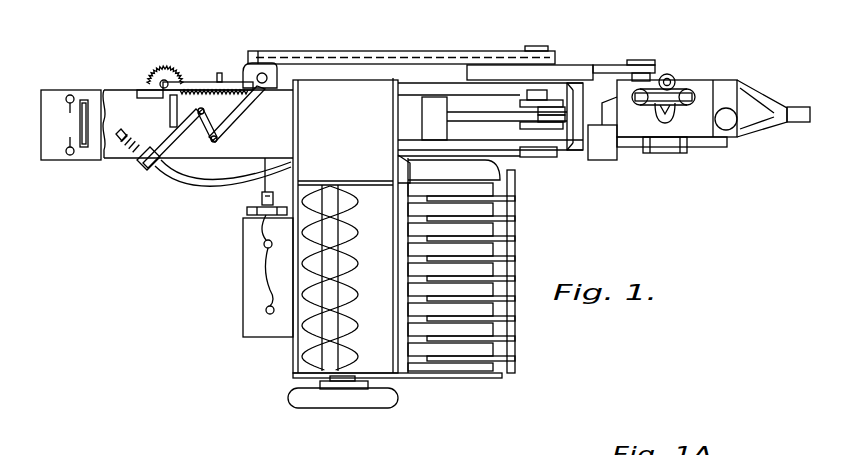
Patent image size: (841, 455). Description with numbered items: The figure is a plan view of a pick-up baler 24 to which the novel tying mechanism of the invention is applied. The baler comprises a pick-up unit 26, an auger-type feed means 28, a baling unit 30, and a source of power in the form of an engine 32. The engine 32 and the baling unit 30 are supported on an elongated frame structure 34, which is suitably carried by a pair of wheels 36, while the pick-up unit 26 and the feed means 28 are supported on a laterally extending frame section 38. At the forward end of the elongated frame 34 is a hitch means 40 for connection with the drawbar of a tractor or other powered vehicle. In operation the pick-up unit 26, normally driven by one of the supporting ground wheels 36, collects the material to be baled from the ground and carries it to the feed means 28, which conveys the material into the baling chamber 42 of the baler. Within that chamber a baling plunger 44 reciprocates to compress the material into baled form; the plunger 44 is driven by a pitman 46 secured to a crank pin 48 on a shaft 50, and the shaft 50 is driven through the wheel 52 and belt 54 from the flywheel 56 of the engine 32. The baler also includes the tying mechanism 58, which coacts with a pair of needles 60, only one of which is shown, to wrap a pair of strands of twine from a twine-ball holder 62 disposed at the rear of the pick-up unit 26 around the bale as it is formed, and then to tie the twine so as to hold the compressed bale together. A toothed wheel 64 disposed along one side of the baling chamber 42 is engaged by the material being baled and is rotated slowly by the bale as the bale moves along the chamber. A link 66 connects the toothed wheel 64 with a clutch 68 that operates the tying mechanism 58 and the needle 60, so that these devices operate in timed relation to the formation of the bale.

The pick-up baler 24 is at (220, 255).
The pick-up unit 26 is at (482, 380).
The auger-type feed means 28 is at (358, 275).
The baling unit 30 is at (470, 100).
The engine 32 is at (694, 78).
The elongated frame structure 34 is at (593, 160).
The wheels 36 is at (333, 410).
The laterally extending frame section 38 is at (292, 362).
The hitch means 40 is at (800, 125).
The baling chamber 42 is at (278, 131).
The baling plunger 44 is at (422, 128).
The pitman 46 is at (495, 122).
The crank pin 48 is at (552, 128).
The shaft 50 is at (545, 93).
The wheel 52 is at (588, 65).
The belt 54 is at (612, 65).
The flywheel 56 is at (648, 61).
The tying mechanism 58 is at (236, 66).
The needle 60 is at (182, 190).
The twine-ball holder 62 is at (243, 311).
The toothed wheel 64 is at (155, 75).
The link 66 is at (190, 80).
The clutch 68 is at (277, 68).